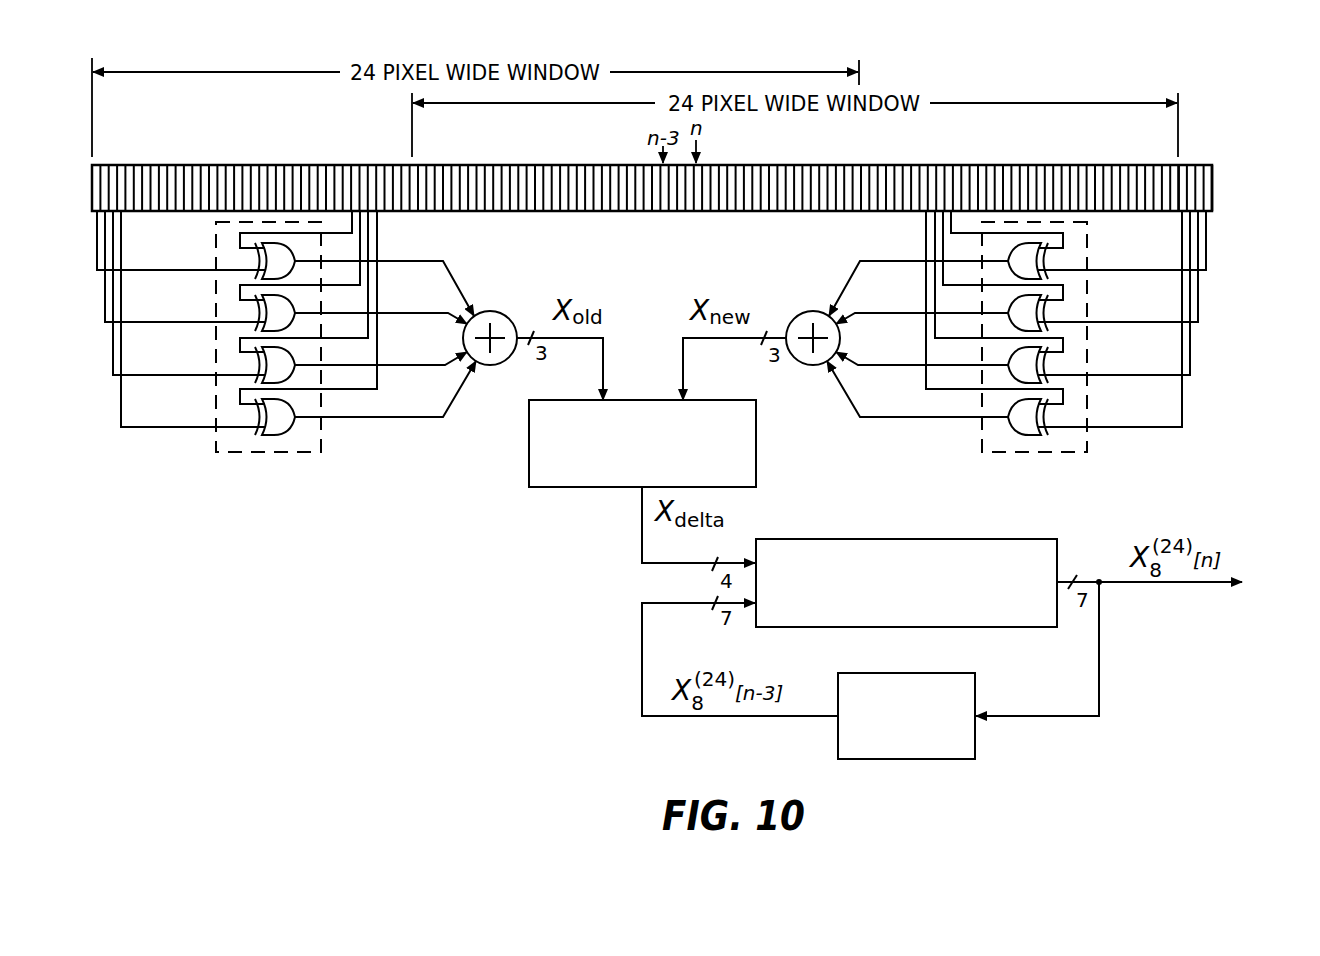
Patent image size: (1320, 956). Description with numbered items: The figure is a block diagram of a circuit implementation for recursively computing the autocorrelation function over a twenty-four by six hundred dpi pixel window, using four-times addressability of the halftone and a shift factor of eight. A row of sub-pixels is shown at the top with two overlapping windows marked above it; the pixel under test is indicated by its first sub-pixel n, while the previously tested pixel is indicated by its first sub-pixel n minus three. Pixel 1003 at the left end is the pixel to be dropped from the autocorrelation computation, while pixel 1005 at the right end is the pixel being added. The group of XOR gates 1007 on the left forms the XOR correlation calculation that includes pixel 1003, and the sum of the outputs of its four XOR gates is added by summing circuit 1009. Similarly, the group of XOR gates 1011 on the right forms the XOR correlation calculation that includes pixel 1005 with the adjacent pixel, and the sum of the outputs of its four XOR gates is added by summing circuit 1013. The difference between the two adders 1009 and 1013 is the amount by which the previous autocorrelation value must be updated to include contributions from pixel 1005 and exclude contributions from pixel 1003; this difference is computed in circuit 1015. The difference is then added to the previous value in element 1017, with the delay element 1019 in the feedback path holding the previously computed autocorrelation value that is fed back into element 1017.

The pixel 1003 is at (110, 165).
The pixel 1005 is at (1193, 165).
The group of XOR gates 1007 is at (250, 452).
The summing circuit 1009 is at (500, 315).
The group of XOR gates 1011 is at (1018, 453).
The summing circuit 1013 is at (802, 315).
The difference circuit 1015 is at (585, 488).
The adder element 1017 is at (1027, 539).
The delay element 1019 is at (940, 673).